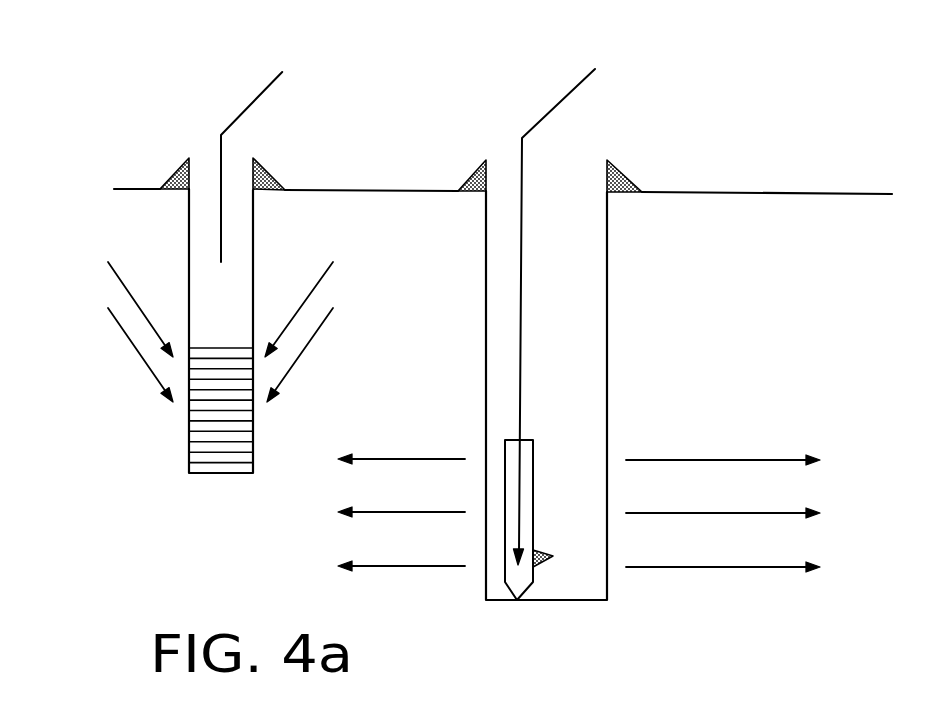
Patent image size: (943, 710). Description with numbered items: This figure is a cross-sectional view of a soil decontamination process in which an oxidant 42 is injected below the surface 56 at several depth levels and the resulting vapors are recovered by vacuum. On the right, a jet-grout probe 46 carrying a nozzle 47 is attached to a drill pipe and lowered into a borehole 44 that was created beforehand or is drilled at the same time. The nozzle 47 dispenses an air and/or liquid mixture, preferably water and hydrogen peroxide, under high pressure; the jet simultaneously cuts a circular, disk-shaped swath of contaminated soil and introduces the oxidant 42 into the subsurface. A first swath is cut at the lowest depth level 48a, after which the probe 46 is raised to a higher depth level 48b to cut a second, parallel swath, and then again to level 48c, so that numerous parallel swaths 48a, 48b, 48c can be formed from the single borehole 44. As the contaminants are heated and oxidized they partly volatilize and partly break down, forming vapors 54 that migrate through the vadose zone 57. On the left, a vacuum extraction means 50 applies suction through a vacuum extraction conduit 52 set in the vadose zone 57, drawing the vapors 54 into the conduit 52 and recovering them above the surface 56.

The oxidant 42 is at (575, 306).
The borehole 44 is at (625, 280).
The jet-grout probe 46 is at (550, 453).
The nozzle 47 is at (552, 578).
The first depth level swath 48a is at (576, 567).
The second depth level swath 48b is at (576, 512).
The third depth level swath 48c is at (576, 458).
The vacuum extraction means 50 is at (278, 153).
The vacuum extraction conduit 52 is at (269, 242).
The vapors 54 is at (93, 252).
The surface 56 is at (788, 179).
The vadose zone 57 is at (763, 313).